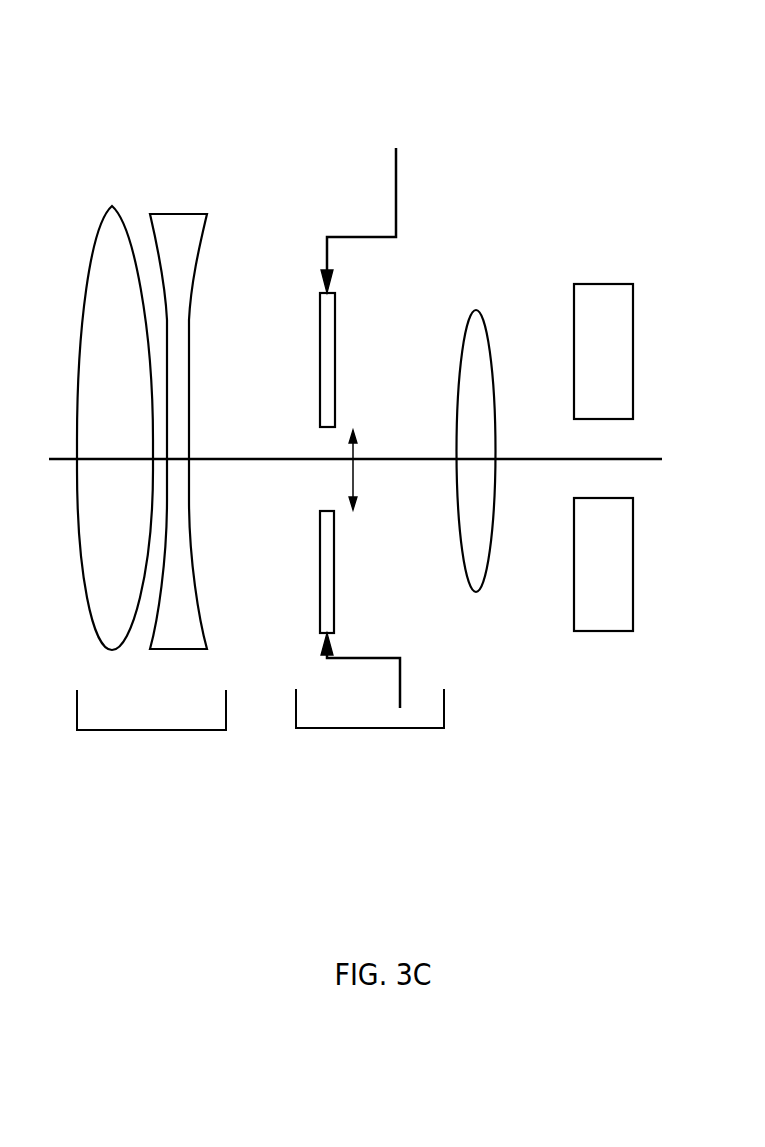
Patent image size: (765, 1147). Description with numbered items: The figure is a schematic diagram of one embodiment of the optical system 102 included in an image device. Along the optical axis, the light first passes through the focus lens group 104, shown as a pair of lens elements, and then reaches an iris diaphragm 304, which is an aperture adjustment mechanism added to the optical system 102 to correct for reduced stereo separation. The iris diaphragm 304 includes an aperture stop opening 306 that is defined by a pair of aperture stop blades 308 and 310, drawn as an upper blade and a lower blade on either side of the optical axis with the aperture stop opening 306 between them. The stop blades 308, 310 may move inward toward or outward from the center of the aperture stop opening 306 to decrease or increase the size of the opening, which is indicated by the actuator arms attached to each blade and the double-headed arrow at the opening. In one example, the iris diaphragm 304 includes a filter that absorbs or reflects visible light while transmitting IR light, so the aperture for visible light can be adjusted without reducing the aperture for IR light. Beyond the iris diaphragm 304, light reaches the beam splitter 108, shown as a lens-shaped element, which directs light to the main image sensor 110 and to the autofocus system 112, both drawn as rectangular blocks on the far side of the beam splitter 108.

The optical lens system 102 is at (513, 82).
The focus lens group 104 is at (151, 511).
The beam splitter 108 is at (476, 309).
The main image sensor 110 is at (610, 627).
The autofocus system 112 is at (602, 284).
The iris diaphragm 304 is at (353, 486).
The aperture stop opening 306 is at (366, 470).
The aperture stop blade 308 is at (322, 302).
The aperture stop blade 310 is at (322, 540).